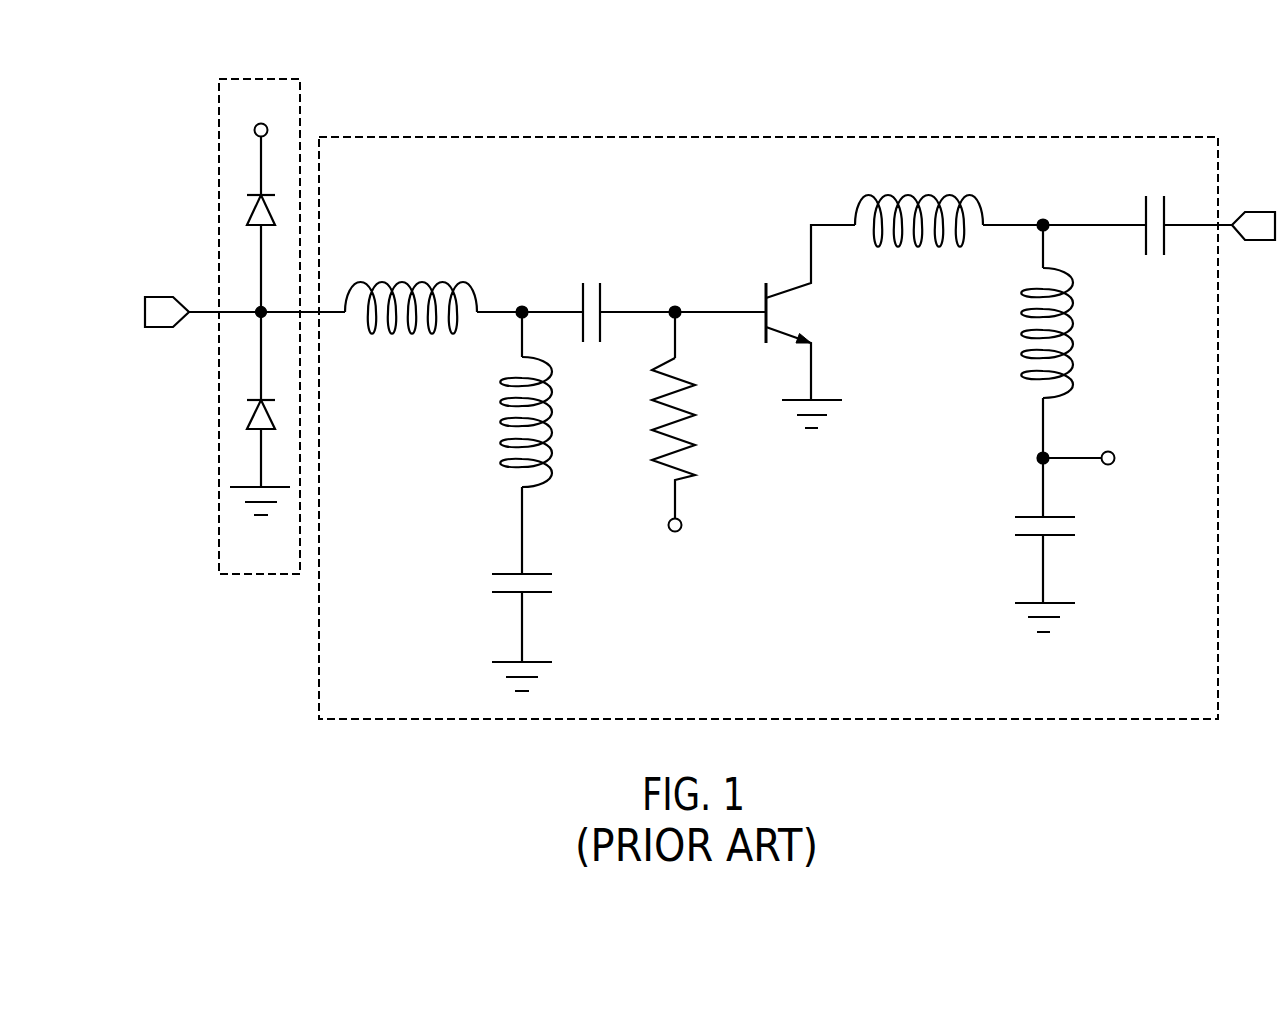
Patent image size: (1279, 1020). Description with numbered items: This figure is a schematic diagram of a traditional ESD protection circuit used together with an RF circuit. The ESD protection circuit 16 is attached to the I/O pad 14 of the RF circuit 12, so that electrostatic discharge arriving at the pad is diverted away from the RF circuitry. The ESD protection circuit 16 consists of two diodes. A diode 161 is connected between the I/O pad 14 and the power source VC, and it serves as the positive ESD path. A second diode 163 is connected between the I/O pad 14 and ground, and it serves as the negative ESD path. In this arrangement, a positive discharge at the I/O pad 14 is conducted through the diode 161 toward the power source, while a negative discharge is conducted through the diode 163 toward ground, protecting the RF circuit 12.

The RF circuit 12 is at (950, 137).
The I/O pad 14 is at (148, 297).
The ESD protection circuit 16 is at (226, 294).
The diode 161 is at (255, 200).
The diode 163 is at (252, 405).